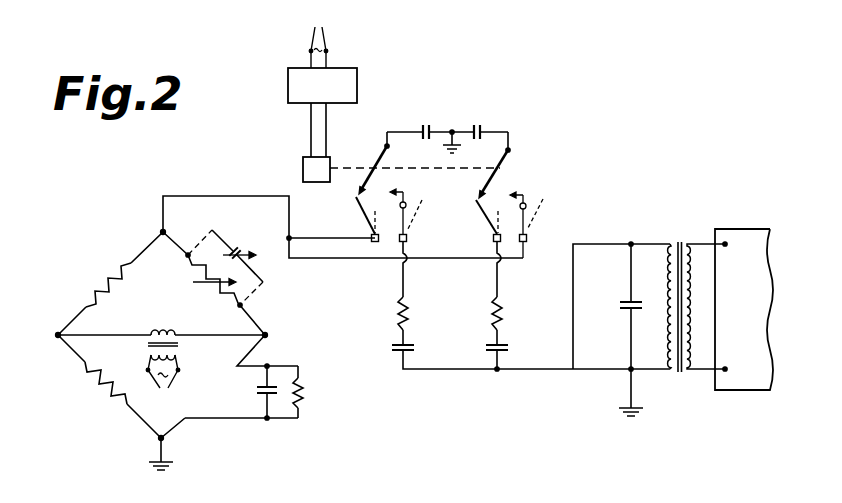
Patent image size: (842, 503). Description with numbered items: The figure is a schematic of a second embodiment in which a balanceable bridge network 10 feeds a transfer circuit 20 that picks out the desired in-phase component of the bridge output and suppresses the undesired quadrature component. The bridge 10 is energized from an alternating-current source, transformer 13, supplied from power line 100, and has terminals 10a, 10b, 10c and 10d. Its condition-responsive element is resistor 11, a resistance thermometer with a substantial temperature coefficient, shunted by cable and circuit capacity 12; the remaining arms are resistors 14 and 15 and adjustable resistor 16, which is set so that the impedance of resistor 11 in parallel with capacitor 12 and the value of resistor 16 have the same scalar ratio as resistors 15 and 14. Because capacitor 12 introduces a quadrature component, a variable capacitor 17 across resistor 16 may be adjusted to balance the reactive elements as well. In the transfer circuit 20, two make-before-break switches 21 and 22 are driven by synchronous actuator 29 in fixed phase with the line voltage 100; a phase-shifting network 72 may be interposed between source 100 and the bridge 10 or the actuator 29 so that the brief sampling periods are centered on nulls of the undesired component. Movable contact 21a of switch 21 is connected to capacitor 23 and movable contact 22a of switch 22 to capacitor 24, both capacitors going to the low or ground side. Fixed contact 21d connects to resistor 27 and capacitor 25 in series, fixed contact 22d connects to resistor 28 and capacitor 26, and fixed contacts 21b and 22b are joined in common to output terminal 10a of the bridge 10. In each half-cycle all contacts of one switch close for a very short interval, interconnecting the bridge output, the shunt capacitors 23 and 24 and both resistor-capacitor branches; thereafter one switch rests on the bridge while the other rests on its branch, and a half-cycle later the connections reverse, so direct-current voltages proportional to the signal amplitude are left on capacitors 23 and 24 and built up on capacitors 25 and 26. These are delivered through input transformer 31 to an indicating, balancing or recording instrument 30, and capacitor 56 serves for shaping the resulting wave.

The balanceable bridge network 10 is at (38, 246).
The output terminal of bridge network 10a is at (161, 231).
The bridge terminal 10b is at (163, 439).
The bridge terminal 10c is at (57, 334).
The bridge terminal 10d is at (267, 334).
The resistor 11 is at (305, 394).
The cable and circuit capacity 12 is at (256, 390).
The transformer 13 is at (160, 330).
The resistor 14 is at (108, 278).
The resistor 15 is at (103, 396).
The resistor 16 is at (223, 293).
The variable capacitor 17 is at (240, 242).
The transfer circuit 20 is at (539, 132).
The switch 21 is at (506, 195).
The movable contact of switch 21 21a is at (511, 161).
The fixed contact of switch 21 21b is at (524, 195).
The fixed contact of switch 21 21d is at (482, 211).
The switch 22 is at (384, 184).
The movable contact of switch 22 22a is at (386, 163).
The fixed contact of switch 22 22b is at (366, 212).
The fixed contact of switch 22 22d is at (404, 192).
The capacitor 23 is at (477, 122).
The capacitor 24 is at (426, 122).
The capacitor 25 is at (510, 348).
The capacitor 26 is at (414, 348).
The resistor 27 is at (503, 316).
The resistor 28 is at (397, 313).
The synchronous actuator 29 is at (303, 163).
The instrument 30 is at (755, 307).
The input transformer 31 is at (679, 244).
The capacitor 56 is at (617, 305).
The phase-shifting network 72 is at (288, 83).
The power line 100 is at (241, 206).